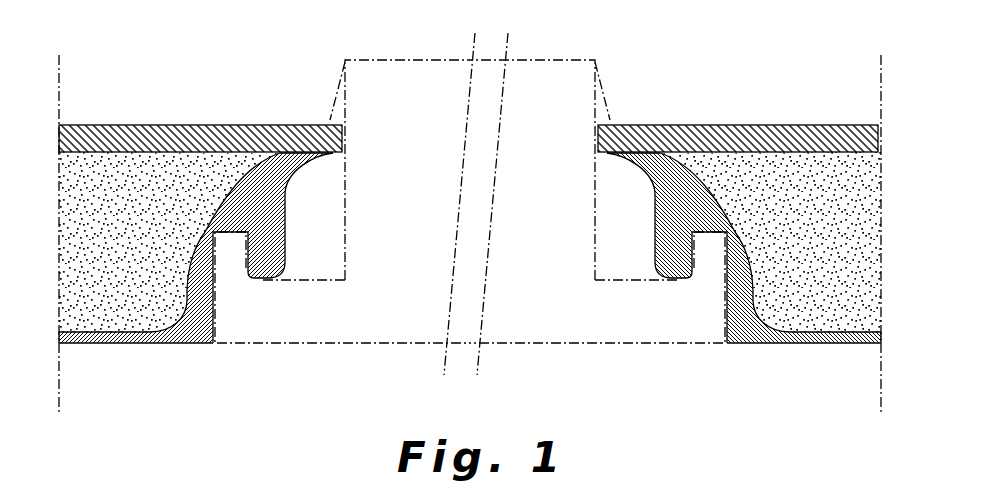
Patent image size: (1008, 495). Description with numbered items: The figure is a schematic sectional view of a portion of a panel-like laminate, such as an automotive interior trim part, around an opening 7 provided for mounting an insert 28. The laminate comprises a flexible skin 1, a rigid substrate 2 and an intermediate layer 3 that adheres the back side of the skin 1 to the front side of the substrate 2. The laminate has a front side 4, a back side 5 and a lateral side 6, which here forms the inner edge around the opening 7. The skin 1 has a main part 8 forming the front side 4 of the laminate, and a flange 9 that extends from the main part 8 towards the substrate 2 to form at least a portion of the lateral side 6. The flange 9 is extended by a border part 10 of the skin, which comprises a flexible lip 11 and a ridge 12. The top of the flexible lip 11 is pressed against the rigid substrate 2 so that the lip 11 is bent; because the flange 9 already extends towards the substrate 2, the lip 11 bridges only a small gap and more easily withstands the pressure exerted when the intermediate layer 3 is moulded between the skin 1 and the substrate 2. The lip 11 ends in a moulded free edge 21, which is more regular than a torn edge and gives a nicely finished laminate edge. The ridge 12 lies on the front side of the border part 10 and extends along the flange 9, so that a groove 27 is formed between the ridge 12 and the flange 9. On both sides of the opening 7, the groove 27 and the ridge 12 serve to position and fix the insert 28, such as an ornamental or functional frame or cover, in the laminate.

The flexible skin 1 is at (468, 269).
The rigid substrate 2 is at (795, 140).
The intermediate layer 3 is at (823, 232).
The front side 4 is at (146, 364).
The back side 5 is at (198, 94).
The lateral side 6 is at (344, 259).
The opening 7 is at (362, 126).
The main part 8 is at (822, 340).
The flange 9 is at (202, 294).
The border part 10 is at (653, 213).
The flexible lip 11 is at (655, 173).
The ridge 12 is at (662, 275).
The moulded free edge 21 is at (600, 152).
The groove 27 is at (702, 240).
The insert 28 is at (385, 343).